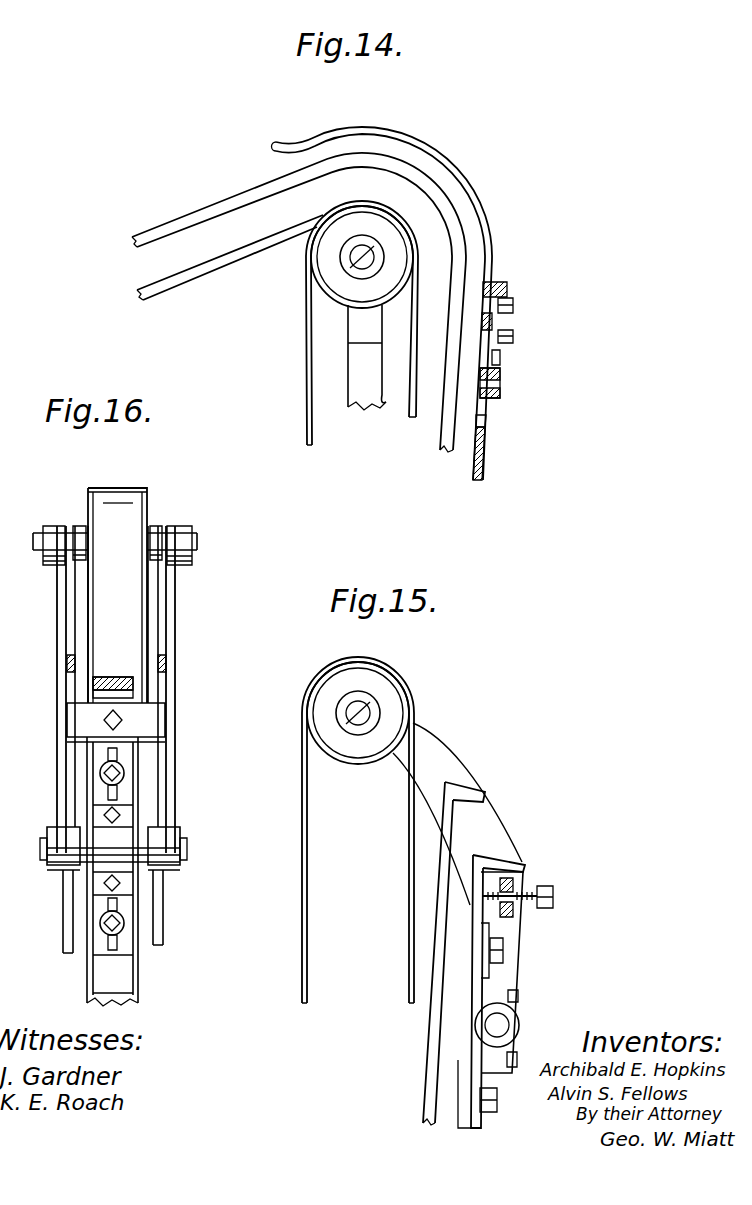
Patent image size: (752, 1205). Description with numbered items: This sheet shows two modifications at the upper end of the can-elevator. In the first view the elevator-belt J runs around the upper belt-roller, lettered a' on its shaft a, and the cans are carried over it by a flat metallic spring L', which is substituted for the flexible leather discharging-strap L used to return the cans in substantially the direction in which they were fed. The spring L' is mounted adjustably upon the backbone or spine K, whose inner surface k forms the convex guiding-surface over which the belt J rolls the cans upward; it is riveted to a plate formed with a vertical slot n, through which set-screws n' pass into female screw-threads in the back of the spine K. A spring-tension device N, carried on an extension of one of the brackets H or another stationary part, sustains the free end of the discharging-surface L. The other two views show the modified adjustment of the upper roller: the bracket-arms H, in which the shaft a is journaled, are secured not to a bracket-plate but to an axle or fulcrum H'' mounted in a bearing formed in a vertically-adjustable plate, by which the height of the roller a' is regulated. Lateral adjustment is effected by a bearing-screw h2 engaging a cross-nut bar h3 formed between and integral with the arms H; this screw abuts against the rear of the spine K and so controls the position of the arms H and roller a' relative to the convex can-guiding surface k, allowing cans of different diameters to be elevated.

In FIG. 14, the elevator-belt J is at (336, 404).
In FIG. 16, the elevator-belt J is at (128, 620).
In FIG. 15, the elevator-belt J is at (330, 949).
In FIG. 14, the shaft a is at (362, 257).
In FIG. 16, the shaft a is at (123, 545).
In FIG. 15, the shaft a is at (358, 713).
In FIG. 14, the pulley a' is at (362, 257).
In FIG. 16, the pulley a' is at (107, 720).
In FIG. 15, the pulley a' is at (358, 713).
In FIG. 14, the bracket-arms H is at (366, 357).
In FIG. 16, the bracket-arms H is at (118, 689).
In FIG. 15, the bracket-arms H is at (460, 924).
In FIG. 16, the axle or fulcrum H'' is at (127, 848).
In FIG. 15, the axle or fulcrum H'' is at (520, 1025).
In FIG. 14, the flat metallic spring L' is at (316, 303).
In FIG. 16, the flat metallic spring L' is at (110, 871).
In FIG. 15, the flat metallic spring L' is at (501, 992).
In FIG. 15, the flexible discharging-surface L is at (508, 1083).
In FIG. 14, the convex guiding-surface k is at (478, 384).
In FIG. 15, the convex guiding-surface k is at (486, 991).
In FIG. 14, the backbone or spine K is at (515, 453).
In FIG. 16, the backbone or spine K is at (126, 985).
In FIG. 15, the backbone or spine K is at (472, 1105).
In FIG. 14, the spring-tension device N is at (530, 395).
In FIG. 14, the vertical slot n is at (516, 358).
In FIG. 14, the set-screws n' is at (517, 317).
In FIG. 16, the bearing-screw h2 is at (116, 707).
In FIG. 15, the bearing-screw h2 is at (530, 896).
In FIG. 16, the cross-nut bar h3 is at (116, 729).
In FIG. 15, the cross-nut bar h3 is at (521, 890).